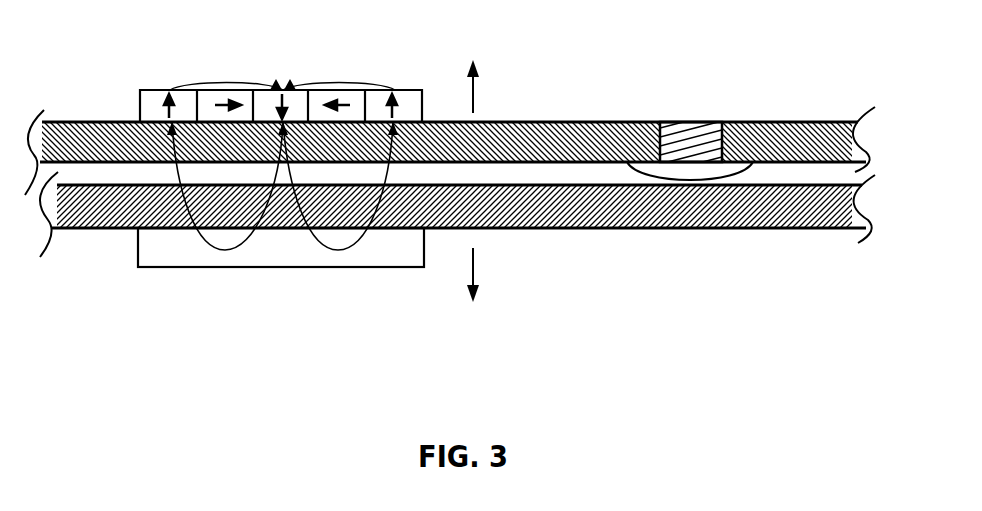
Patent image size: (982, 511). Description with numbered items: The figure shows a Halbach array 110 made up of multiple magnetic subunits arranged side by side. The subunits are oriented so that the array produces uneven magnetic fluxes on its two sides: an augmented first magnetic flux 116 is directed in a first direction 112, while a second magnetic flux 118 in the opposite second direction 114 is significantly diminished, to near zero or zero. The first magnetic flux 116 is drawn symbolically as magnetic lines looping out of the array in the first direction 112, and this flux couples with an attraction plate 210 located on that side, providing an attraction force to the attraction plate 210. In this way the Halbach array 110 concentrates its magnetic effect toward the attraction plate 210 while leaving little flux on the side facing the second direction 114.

The Halbach array 110 is at (140, 102).
The first direction 112 is at (475, 272).
The second direction 114 is at (477, 98).
The first magnetic flux 116 is at (323, 247).
The second magnetic flux 118 is at (330, 78).
The attraction plate 210 is at (178, 258).